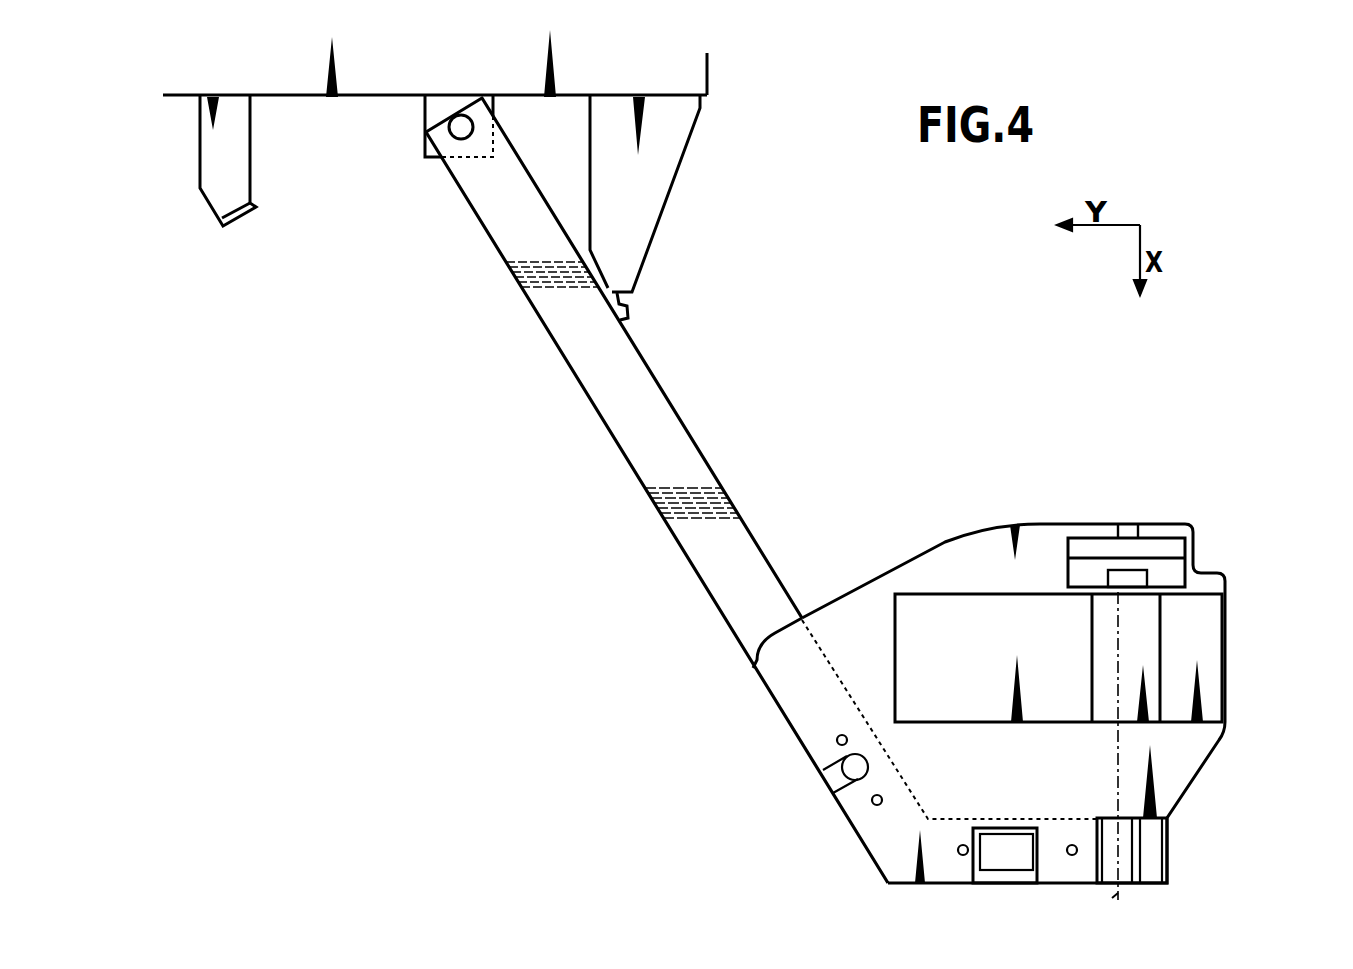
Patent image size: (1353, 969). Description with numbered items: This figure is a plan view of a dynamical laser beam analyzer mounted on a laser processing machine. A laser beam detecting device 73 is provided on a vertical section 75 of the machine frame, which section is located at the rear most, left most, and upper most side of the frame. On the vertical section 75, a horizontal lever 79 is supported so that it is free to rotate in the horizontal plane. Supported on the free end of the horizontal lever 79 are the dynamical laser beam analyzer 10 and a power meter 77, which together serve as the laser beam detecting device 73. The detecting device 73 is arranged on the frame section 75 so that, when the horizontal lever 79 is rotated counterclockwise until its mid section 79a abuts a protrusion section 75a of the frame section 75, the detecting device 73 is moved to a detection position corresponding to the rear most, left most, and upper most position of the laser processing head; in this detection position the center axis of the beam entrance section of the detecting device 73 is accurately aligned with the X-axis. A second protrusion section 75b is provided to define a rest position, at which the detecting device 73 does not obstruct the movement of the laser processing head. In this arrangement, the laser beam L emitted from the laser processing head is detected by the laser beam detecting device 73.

The dynamical laser beam analyzer 10 is at (933, 610).
The laser beam detecting device 73 is at (1232, 518).
The vertical section 75 is at (687, 72).
The protrusion section 75a is at (645, 192).
The protrusion section 75b is at (220, 183).
The power meter 77 is at (1152, 555).
The horizontal lever 79 is at (617, 358).
The mid section 79a is at (627, 295).
The laser beam L is at (1120, 891).